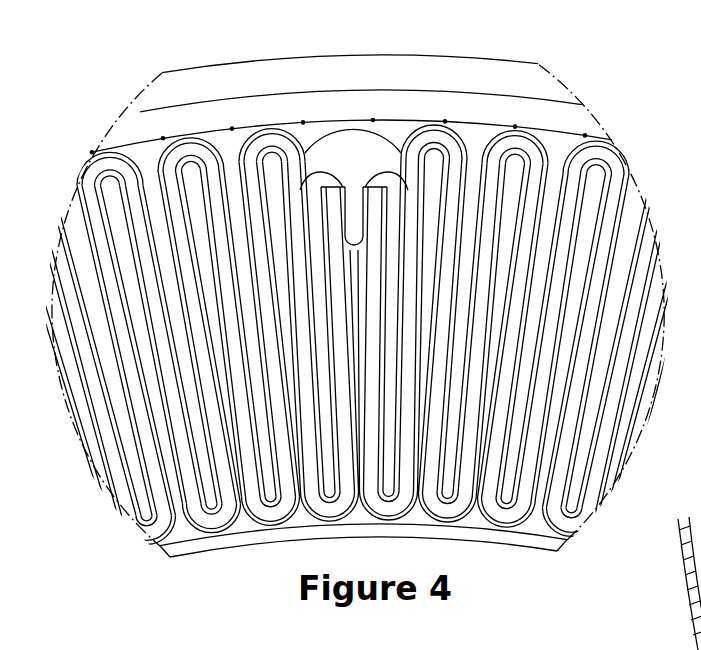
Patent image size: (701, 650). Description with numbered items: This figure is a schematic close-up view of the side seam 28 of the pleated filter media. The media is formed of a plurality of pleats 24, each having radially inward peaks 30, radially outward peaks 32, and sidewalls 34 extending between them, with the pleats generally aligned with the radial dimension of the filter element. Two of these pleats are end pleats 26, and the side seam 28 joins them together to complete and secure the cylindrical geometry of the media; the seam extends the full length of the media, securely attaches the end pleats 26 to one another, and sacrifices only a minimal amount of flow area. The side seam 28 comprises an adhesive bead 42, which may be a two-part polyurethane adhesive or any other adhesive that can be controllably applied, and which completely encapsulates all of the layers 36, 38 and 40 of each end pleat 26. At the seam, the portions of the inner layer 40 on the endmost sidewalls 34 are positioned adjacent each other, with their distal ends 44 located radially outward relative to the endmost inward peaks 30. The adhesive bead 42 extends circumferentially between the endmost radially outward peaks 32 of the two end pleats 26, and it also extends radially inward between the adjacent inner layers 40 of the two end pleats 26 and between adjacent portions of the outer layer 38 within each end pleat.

The pleats 24 is at (565, 245).
The end pleats 26 is at (305, 384).
The side seam 28 is at (405, 77).
The radially inward peaks 30 is at (333, 527).
The radially outward peaks 32 is at (269, 129).
The sidewalls 34 is at (362, 397).
The layer 36 is at (338, 181).
The outer layer 38 is at (322, 190).
The inner layer 40 is at (330, 196).
The adhesive bead 42 is at (352, 148).
The distal ends 44 is at (337, 205).